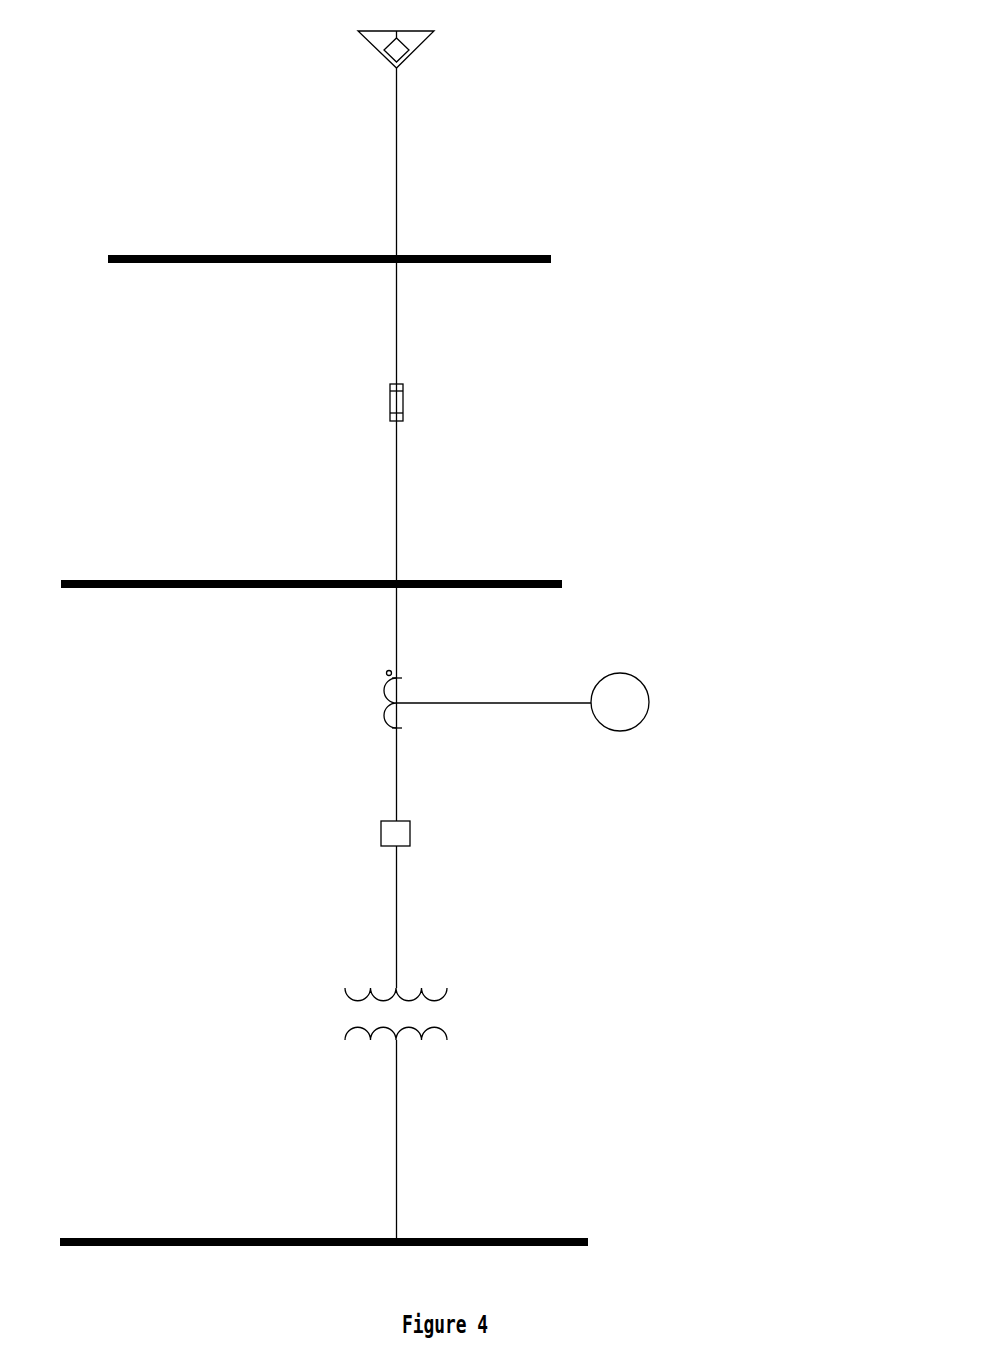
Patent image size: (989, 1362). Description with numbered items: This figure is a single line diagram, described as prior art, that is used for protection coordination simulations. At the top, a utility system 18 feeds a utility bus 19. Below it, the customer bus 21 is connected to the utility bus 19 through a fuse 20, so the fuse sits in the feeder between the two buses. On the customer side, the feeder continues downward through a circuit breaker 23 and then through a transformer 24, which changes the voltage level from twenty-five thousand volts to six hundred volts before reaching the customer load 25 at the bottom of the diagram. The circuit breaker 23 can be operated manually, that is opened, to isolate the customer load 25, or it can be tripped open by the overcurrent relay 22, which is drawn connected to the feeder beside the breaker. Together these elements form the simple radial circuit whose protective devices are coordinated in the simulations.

The utility system 18 is at (324, 37).
The utility bus 19 is at (324, 218).
The fuse 20 is at (459, 400).
The customer bus 21 is at (311, 554).
The overcurrent relay 22 is at (576, 700).
The circuit breaker 23 is at (460, 824).
The transformer 24 is at (372, 1014).
The customer load 25 is at (361, 1201).